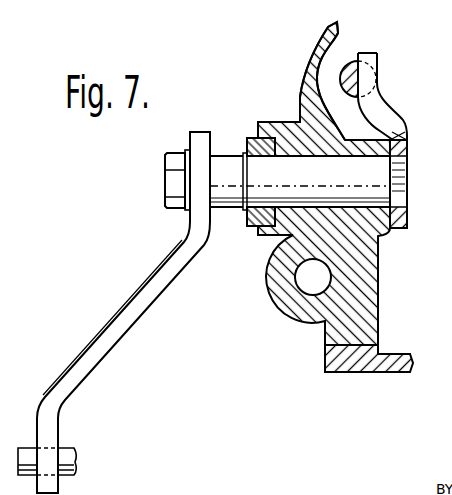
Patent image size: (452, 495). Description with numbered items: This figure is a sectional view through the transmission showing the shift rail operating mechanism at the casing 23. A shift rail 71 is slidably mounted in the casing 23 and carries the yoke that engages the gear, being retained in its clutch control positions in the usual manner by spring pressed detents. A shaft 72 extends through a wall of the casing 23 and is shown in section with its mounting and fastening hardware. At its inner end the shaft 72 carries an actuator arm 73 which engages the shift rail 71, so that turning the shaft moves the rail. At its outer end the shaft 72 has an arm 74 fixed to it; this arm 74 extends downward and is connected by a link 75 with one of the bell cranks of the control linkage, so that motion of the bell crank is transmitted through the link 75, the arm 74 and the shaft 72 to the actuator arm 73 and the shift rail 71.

The casing 23 is at (318, 34).
The shift rail 71 is at (349, 61).
The shaft 72 is at (228, 160).
The actuator arm 73 is at (394, 120).
The arm 74 is at (125, 318).
The link 75 is at (68, 456).